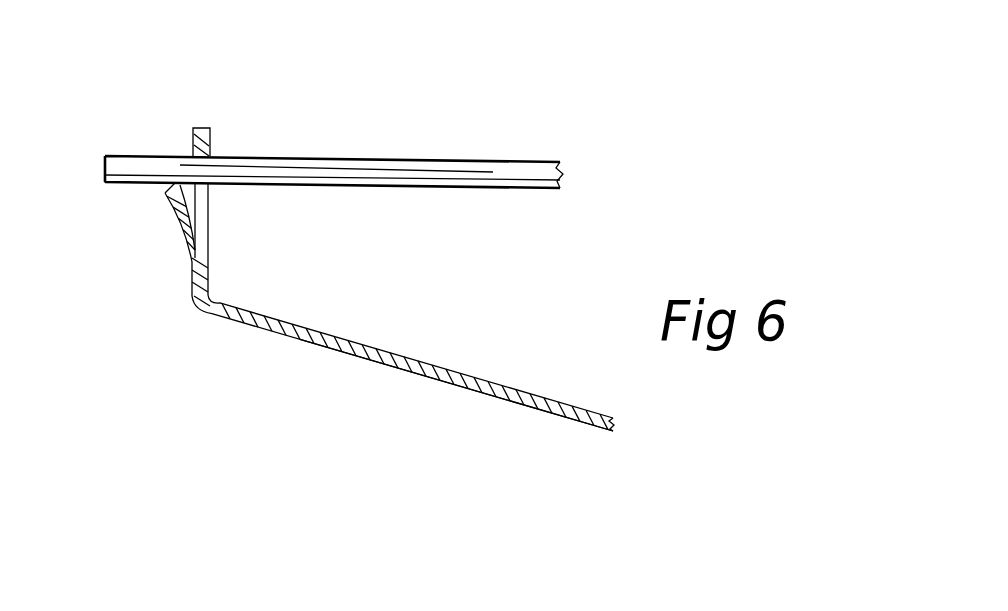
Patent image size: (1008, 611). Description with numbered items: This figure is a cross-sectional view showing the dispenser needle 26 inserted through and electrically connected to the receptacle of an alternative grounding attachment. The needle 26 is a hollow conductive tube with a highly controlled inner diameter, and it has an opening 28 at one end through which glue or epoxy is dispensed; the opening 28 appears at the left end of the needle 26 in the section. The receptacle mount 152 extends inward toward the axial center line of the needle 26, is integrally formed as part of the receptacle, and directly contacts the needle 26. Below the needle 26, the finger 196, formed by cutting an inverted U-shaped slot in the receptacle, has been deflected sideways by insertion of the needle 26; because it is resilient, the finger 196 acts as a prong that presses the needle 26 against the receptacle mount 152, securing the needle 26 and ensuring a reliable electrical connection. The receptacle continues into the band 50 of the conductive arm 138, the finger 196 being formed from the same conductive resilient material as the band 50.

The needle 26 is at (413, 160).
The opening 28 is at (105, 160).
The receptacle mount 152 is at (203, 127).
The finger 196 is at (172, 235).
The band 50 is at (395, 367).
The conductive arm 138 is at (533, 407).